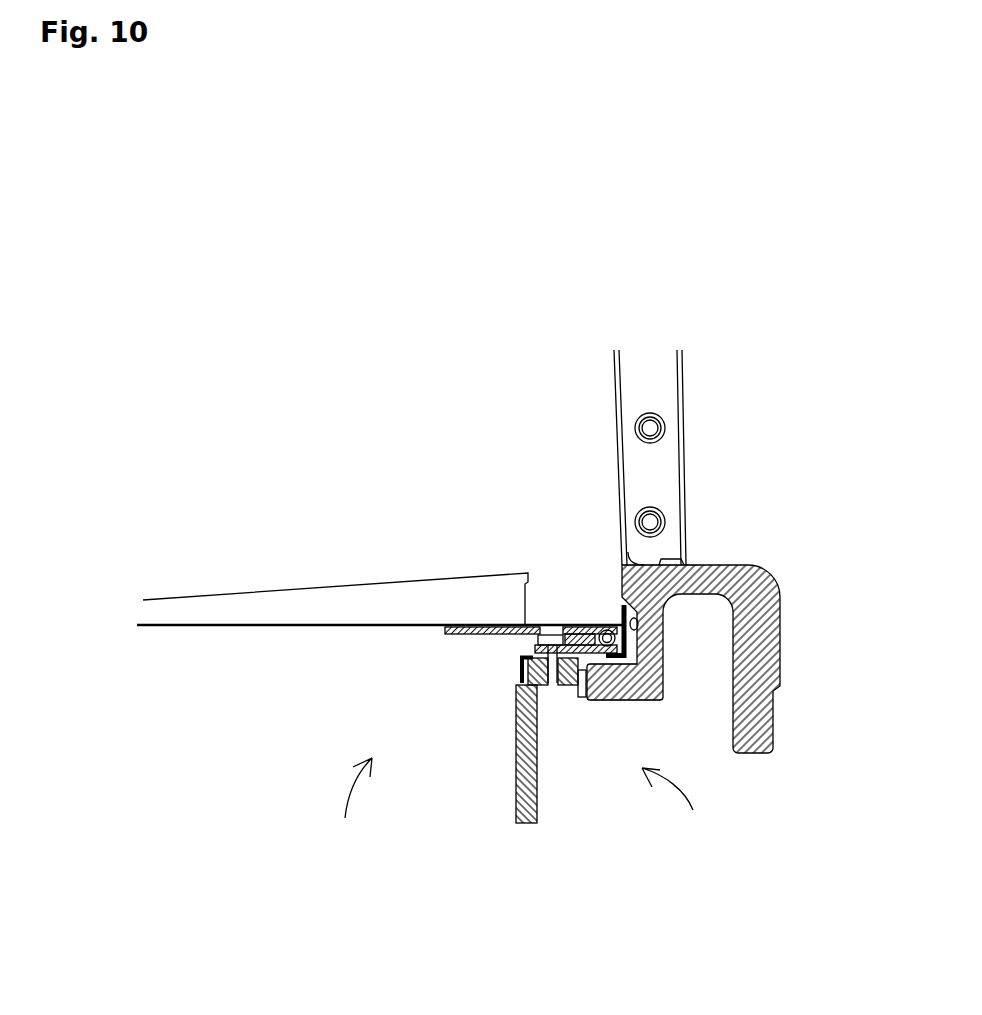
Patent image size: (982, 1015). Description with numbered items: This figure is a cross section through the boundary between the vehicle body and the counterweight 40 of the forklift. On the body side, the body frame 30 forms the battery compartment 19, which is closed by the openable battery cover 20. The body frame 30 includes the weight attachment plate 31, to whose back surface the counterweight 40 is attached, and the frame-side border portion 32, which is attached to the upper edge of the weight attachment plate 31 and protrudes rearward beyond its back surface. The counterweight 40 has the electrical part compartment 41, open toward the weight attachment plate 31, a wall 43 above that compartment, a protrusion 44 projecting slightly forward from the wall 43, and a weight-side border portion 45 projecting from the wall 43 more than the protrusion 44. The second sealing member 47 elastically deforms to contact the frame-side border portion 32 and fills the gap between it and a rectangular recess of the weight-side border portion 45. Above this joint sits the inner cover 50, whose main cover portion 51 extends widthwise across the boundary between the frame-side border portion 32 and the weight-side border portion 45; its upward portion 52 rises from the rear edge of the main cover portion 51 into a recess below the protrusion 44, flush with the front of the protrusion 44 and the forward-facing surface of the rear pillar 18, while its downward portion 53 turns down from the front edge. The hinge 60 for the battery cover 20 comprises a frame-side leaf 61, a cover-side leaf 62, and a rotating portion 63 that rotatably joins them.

The rear pillar 18 is at (628, 463).
The battery compartment 19 is at (354, 801).
The battery cover 20 is at (316, 596).
The body frame 30 is at (350, 740).
The weight attachment plate 31 is at (517, 762).
The frame-side border portion 32 is at (566, 688).
The counterweight 40 is at (479, 684).
The electrical part compartment 41 is at (678, 802).
The wall 43 is at (712, 564).
The protrusion 44 is at (642, 563).
The weight-side border portion 45 is at (620, 701).
The second sealing member 47 is at (582, 700).
The inner cover 50 is at (464, 686).
The main cover portion 51 is at (612, 665).
The upward portion 52 is at (636, 638).
The downward portion 53 is at (521, 667).
The hinge 60 is at (417, 709).
The frame-side leaf 61 is at (535, 649).
The cover-side leaf 62 is at (472, 636).
The rotating portion 63 is at (607, 629).